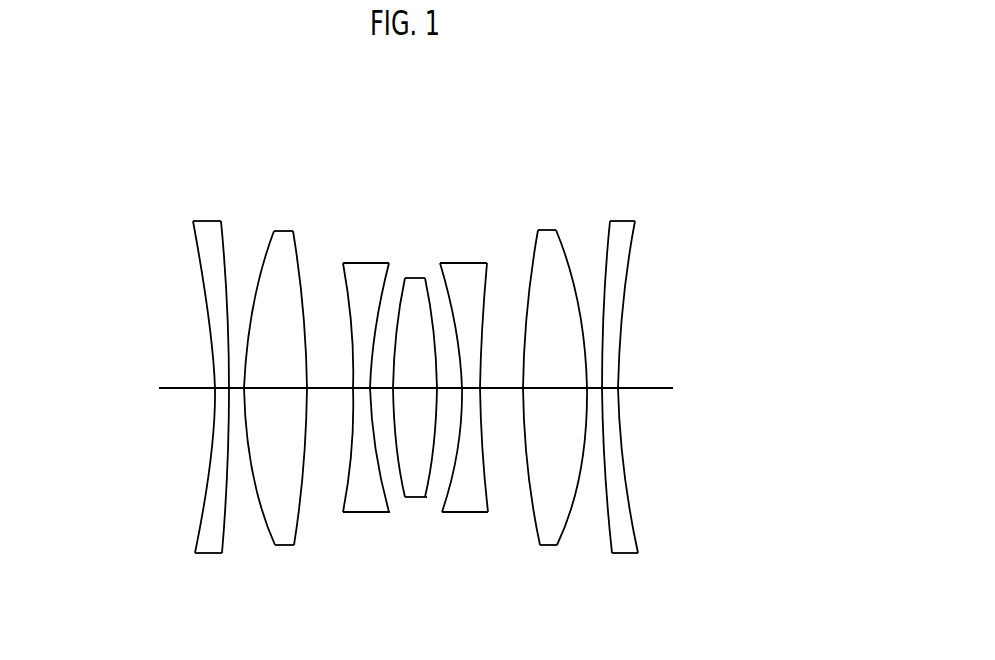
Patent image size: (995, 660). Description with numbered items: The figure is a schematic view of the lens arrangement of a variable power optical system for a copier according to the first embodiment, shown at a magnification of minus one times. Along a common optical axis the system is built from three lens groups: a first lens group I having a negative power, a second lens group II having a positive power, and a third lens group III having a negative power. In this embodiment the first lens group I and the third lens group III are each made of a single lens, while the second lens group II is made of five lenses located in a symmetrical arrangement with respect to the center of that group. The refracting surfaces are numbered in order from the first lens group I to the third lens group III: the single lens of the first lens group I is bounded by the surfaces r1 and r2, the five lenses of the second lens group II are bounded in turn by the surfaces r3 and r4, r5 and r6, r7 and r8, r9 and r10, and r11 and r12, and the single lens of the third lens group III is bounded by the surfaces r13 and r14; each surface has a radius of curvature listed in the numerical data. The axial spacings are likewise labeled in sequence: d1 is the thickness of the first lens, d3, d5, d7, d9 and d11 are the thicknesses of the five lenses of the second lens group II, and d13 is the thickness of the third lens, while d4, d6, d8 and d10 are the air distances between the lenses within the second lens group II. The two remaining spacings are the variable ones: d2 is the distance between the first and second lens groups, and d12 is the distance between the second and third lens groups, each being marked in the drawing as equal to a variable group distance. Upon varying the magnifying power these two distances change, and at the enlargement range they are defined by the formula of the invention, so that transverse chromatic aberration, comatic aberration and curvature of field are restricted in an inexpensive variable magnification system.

The first lens group I is at (228, 100).
The second lens group II is at (572, 100).
The third lens group III is at (663, 100).
The first lens surface r1 is at (195, 220).
The second lens surface r2 is at (220, 218).
The third lens surface r3 is at (273, 228).
The fourth lens surface r4 is at (292, 230).
The fifth lens surface r5 is at (343, 262).
The sixth lens surface r6 is at (389, 263).
The seventh lens surface r7 is at (405, 278).
The eighth lens surface r8 is at (425, 278).
The ninth lens surface r9 is at (440, 263).
The tenth lens surface r10 is at (487, 263).
The eleventh lens surface r11 is at (538, 230).
The twelfth lens surface r12 is at (556, 230).
The thirteenth lens surface r13 is at (610, 221).
The fourteenth lens surface r14 is at (635, 221).
The first lens thickness d1 is at (224, 391).
The distance between first and second lens groups d2 is at (235, 391).
The second lens thickness d3 is at (275, 391).
The first air distance in second lens group d4 is at (327, 391).
The third lens thickness d5 is at (363, 391).
The second air distance in second lens group d6 is at (383, 391).
The fourth lens thickness d7 is at (415, 391).
The third air distance in second lens group d8 is at (445, 391).
The fifth lens thickness d9 is at (472, 391).
The fourth air distance in second lens group d10 is at (508, 391).
The sixth lens thickness d11 is at (547, 391).
The distance between second and third lens groups d12 is at (590, 391).
The seventh lens thickness d13 is at (608, 391).